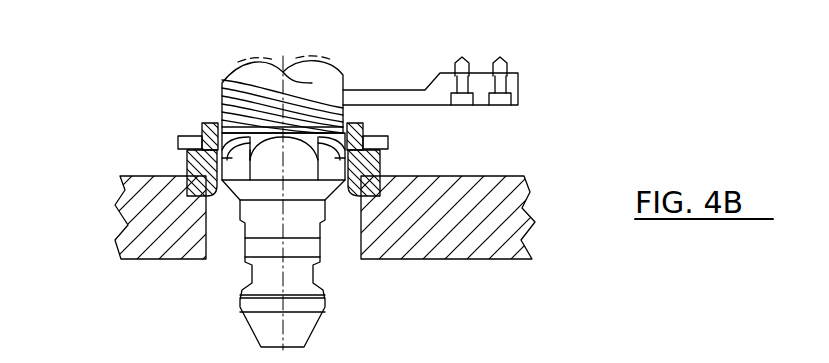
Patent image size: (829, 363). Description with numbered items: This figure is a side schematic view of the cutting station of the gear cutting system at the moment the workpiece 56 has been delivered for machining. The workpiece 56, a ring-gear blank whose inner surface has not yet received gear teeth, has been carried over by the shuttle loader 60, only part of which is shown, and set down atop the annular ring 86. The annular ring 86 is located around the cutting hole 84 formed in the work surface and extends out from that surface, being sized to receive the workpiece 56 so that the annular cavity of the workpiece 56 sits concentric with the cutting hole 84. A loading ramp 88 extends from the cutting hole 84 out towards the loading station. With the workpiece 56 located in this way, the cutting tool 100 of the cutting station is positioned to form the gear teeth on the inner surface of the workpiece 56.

The workpiece 56 is at (211, 122).
The shuttle loader 60 is at (482, 87).
The cutting hole 84 is at (361, 240).
The annular ring 86 is at (187, 167).
The loading ramp 88 is at (380, 141).
The cutting tool 100 is at (347, 63).